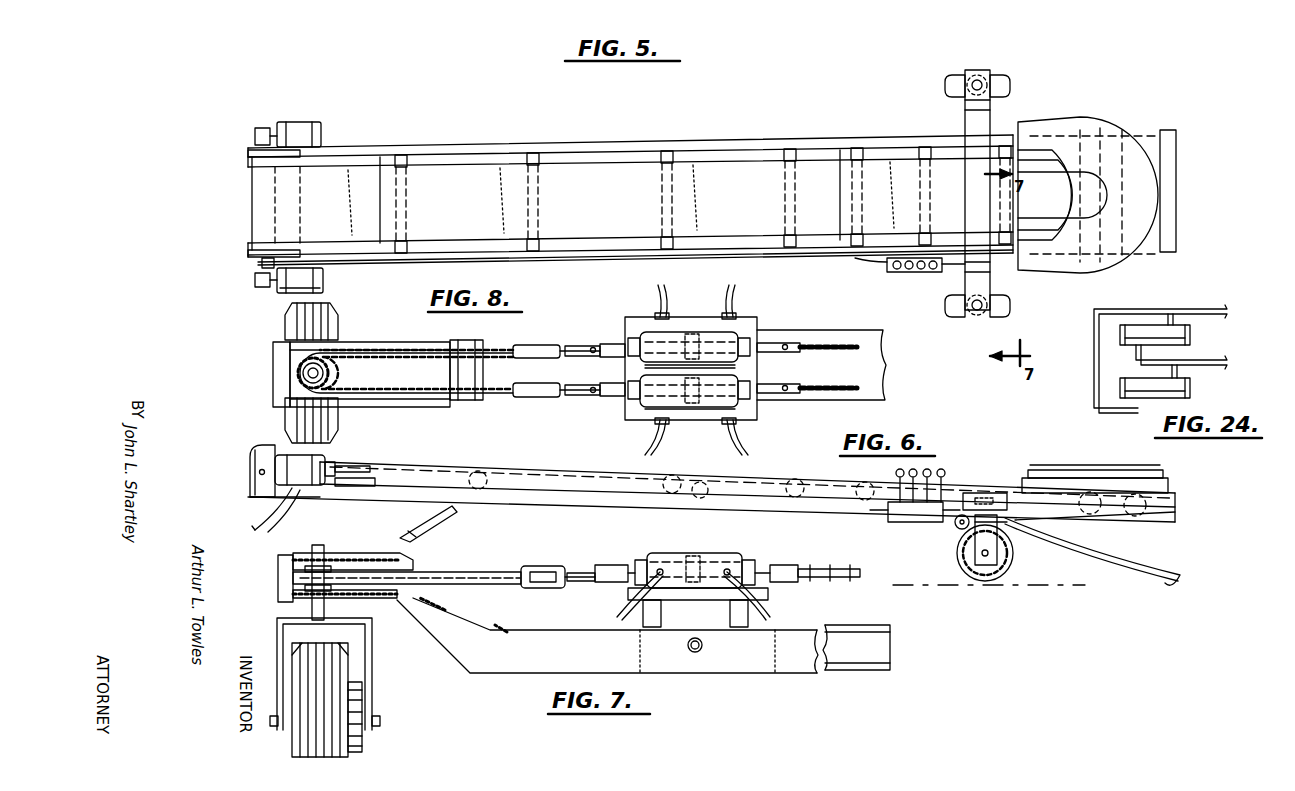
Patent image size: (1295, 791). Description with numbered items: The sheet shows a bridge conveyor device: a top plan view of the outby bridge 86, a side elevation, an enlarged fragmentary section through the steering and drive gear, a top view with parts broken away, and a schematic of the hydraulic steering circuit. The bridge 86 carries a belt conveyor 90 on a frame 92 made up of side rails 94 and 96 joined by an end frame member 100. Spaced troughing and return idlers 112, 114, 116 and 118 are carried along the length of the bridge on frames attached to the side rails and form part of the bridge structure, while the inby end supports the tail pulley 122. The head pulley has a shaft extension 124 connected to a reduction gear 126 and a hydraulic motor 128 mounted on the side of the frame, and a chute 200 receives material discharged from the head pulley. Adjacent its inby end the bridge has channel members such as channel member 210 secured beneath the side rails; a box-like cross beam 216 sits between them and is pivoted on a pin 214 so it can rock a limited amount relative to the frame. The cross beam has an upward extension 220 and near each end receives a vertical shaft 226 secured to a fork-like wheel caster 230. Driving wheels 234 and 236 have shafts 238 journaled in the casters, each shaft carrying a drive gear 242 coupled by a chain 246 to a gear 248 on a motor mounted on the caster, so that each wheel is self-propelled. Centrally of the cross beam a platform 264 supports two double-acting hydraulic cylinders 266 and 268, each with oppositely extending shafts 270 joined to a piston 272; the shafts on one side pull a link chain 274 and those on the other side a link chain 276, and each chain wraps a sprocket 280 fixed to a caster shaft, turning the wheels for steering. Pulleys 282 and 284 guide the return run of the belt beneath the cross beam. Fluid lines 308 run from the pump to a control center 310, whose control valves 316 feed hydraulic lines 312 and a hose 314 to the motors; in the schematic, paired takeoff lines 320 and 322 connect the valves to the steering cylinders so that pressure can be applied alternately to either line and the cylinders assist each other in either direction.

In FIG. 5, the outby bridge 86 is at (630, 140).
In FIG. 5, the belt conveyor 90 is at (612, 209).
In FIG. 5, the frame 92 is at (518, 142).
In FIG. 5, the side rail 94 is at (748, 138).
In FIG. 5, the side rail 96 is at (760, 262).
In FIG. 6, the side rail 96 is at (845, 492).
In FIG. 5, the end frame member 100 is at (1178, 190).
In FIG. 6, the end frame member 100 is at (1176, 500).
In FIG. 6, the troughing and return idler 112 is at (678, 476).
In FIG. 6, the troughing and return idler 114 is at (692, 497).
In FIG. 6, the troughing and return idler 116 is at (418, 462).
In FIG. 6, the troughing and return idler 118 is at (478, 492).
In FIG. 6, the tail pulley 122 is at (1130, 530).
In FIG. 5, the shaft extension 124 is at (262, 266).
In FIG. 5, the reduction gear 126 is at (260, 287).
In FIG. 6, the reduction gear 126 is at (255, 462).
In FIG. 5, the motor 128 is at (302, 285).
In FIG. 6, the motor 128 is at (310, 462).
In FIG. 5, the chute 200 is at (1095, 150).
In FIG. 7, the channel member 210 is at (882, 658).
In FIG. 7, the pivot pin 214 is at (697, 652).
In FIG. 7, the cross beam 216 is at (497, 680).
In FIG. 7, the upward extension 220 is at (410, 551).
In FIG. 8, the shaft 226 is at (300, 375).
In FIG. 7, the shaft 226 is at (305, 566).
In FIG. 7, the wheel caster 230 is at (283, 650).
In FIG. 5, the driving wheel 234 is at (1002, 307).
In FIG. 5, the driving wheel 236 is at (992, 84).
In FIG. 7, the wheel shaft 238 is at (380, 721).
In FIG. 7, the drive gear 242 is at (362, 690).
In FIG. 6, the chain 246 is at (1012, 556).
In FIG. 6, the gear 248 is at (982, 558).
In FIG. 7, the platform 264 is at (765, 594).
In FIG. 8, the hydraulic cylinder 266 is at (735, 337).
In FIG. 24, the hydraulic cylinder 266 is at (1143, 325).
In FIG. 8, the hydraulic cylinder 268 is at (722, 392).
In FIG. 24, the hydraulic cylinder 268 is at (1152, 392).
In FIG. 7, the hydraulic cylinder 268 is at (724, 560).
In FIG. 8, the shaft 270 is at (608, 343).
In FIG. 7, the shaft 270 is at (618, 564).
In FIG. 8, the piston 272 is at (704, 312).
In FIG. 7, the piston 272 is at (708, 550).
In FIG. 8, the link chain 274 is at (478, 392).
In FIG. 7, the link chain 274 is at (523, 566).
In FIG. 8, the link chain 276 is at (856, 343).
In FIG. 7, the link chain 276 is at (845, 580).
In FIG. 8, the sprocket 280 is at (290, 365).
In FIG. 7, the sprocket 280 is at (300, 578).
In FIG. 6, the pulley 282 is at (1002, 492).
In FIG. 6, the pulley 284 is at (957, 528).
In FIG. 6, the fluid line 308 is at (280, 508).
In FIG. 5, the control center 310 is at (944, 272).
In FIG. 6, the control center 310 is at (890, 522).
In FIG. 6, the hydraulic line 312 is at (362, 490).
In FIG. 6, the hydraulic hose 314 is at (1180, 588).
In FIG. 5, the control valve 316 is at (928, 272).
In FIG. 6, the control valve 316 is at (946, 473).
In FIG. 24, the takeoff line 320 is at (1206, 308).
In FIG. 24, the takeoff line 322 is at (1207, 358).